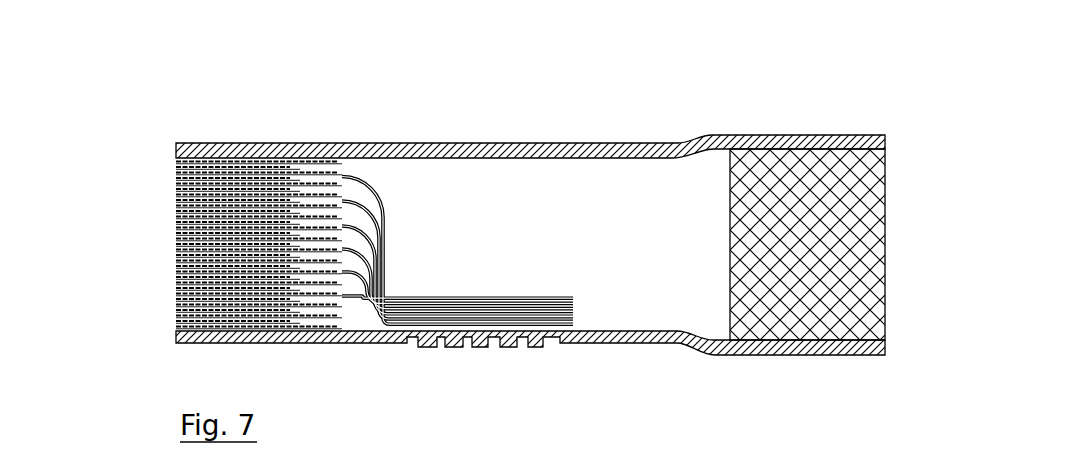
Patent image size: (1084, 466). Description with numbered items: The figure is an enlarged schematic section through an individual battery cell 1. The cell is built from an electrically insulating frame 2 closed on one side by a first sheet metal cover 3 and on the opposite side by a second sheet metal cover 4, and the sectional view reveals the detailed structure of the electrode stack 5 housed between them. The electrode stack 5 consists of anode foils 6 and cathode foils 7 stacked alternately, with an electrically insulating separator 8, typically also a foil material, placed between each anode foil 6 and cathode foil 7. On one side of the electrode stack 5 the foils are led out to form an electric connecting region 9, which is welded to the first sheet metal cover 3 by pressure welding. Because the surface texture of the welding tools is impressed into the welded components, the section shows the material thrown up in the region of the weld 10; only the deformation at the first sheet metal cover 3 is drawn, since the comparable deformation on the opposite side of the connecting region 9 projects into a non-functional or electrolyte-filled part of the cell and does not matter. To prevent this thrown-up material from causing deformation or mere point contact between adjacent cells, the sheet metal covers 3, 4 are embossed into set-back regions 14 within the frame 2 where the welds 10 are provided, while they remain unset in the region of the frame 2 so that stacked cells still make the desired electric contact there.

The individual battery cell 1 is at (188, 83).
The electrically insulating frame 2 is at (825, 183).
The first sheet metal cover 3 is at (593, 343).
The second sheet metal cover 4 is at (648, 148).
The electrode stack 5 is at (176, 176).
The anode foils 6 is at (388, 185).
The cathode foils 7 is at (285, 233).
The separators 8 is at (342, 203).
The electric connecting region 9 is at (482, 308).
The welds 10 is at (445, 343).
The set-back regions 14 is at (590, 145).